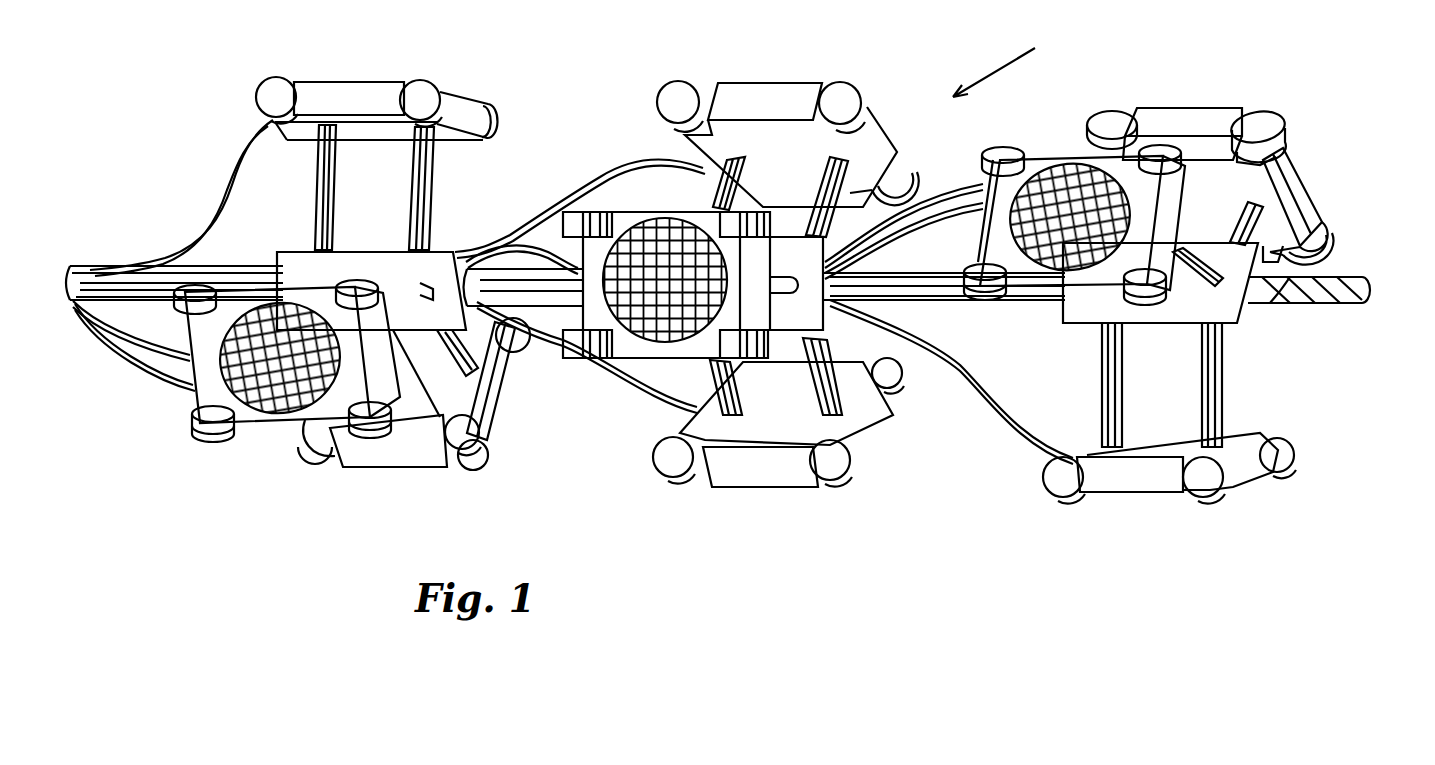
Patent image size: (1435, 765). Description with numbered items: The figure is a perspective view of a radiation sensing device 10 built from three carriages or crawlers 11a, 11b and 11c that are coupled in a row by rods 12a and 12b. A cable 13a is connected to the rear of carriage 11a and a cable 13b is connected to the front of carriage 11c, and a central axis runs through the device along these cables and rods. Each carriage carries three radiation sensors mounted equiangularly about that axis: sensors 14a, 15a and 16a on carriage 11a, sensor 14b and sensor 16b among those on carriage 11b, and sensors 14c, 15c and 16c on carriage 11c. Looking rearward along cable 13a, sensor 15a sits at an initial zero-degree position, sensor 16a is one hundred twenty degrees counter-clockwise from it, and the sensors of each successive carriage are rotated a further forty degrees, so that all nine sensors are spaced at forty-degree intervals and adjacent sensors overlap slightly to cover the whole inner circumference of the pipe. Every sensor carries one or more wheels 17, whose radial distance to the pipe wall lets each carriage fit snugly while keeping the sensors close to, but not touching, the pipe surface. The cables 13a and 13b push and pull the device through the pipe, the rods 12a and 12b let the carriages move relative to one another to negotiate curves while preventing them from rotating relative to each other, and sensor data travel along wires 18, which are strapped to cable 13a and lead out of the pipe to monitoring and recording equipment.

The radiation sensing device 10 is at (1013, 64).
The carriage 11a is at (386, 494).
The carriage 11b is at (749, 514).
The carriage 11c is at (1119, 514).
The rod 12a is at (540, 345).
The rod 12b is at (915, 300).
The cable 13a is at (98, 266).
The cable 13b is at (690, 355).
The radiation sensor 14a is at (352, 375).
The radiation sensor 14b is at (778, 412).
The radiation sensor 14c is at (1130, 324).
The radiation sensor 15a is at (300, 420).
The radiation sensor 15c is at (1057, 287).
The radiation sensor 16a is at (377, 163).
The radiation sensor 16b is at (788, 159).
The radiation sensor 16c is at (1204, 177).
The wheels 17 is at (212, 425).
The wires 18 is at (248, 165).